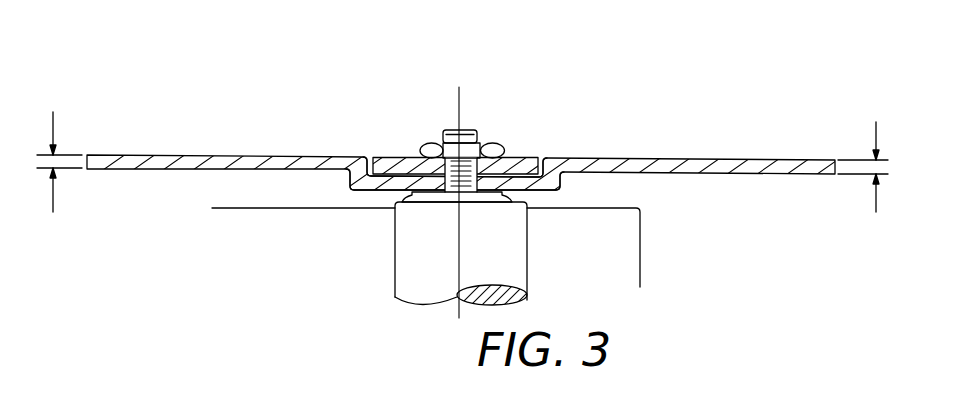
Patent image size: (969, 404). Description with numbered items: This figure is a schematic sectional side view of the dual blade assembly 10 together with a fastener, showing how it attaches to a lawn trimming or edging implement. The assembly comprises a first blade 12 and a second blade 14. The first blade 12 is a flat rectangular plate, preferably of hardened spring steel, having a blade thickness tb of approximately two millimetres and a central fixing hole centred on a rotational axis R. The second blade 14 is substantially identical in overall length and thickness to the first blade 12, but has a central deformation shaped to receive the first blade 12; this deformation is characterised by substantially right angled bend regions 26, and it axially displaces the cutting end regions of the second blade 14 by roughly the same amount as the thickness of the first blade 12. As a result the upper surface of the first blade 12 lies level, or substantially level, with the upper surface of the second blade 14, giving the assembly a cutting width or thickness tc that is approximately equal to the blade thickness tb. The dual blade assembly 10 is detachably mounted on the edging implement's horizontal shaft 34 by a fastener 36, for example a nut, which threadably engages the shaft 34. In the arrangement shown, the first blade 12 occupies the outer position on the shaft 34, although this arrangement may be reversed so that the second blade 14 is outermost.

The dual blade assembly 10 is at (178, 104).
The first blade 12 is at (389, 157).
The second blade 14 is at (677, 166).
The bend regions 26 is at (350, 172).
The horizontal shaft 34 is at (448, 185).
The fastener 36 is at (498, 148).
The rotational axis R is at (462, 103).
The cutting thickness tc is at (53, 162).
The blade thickness tb is at (877, 167).